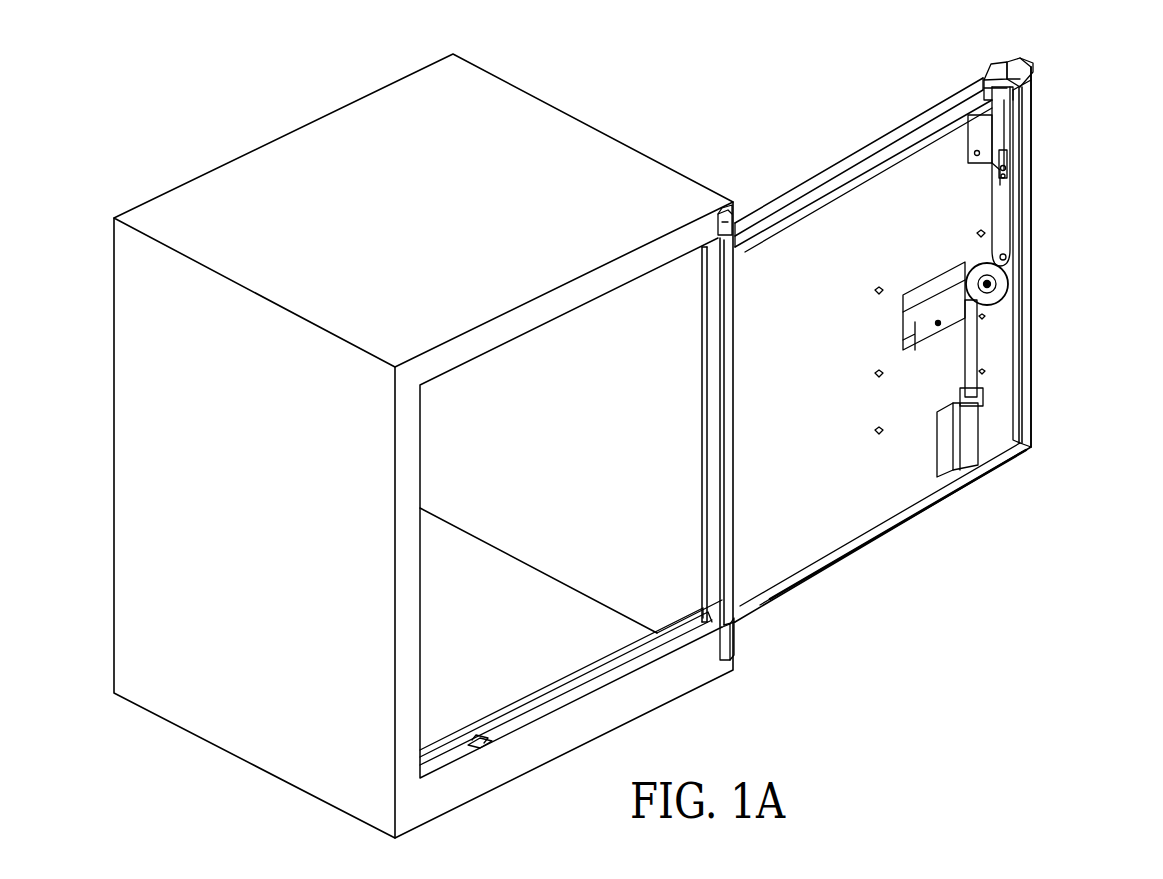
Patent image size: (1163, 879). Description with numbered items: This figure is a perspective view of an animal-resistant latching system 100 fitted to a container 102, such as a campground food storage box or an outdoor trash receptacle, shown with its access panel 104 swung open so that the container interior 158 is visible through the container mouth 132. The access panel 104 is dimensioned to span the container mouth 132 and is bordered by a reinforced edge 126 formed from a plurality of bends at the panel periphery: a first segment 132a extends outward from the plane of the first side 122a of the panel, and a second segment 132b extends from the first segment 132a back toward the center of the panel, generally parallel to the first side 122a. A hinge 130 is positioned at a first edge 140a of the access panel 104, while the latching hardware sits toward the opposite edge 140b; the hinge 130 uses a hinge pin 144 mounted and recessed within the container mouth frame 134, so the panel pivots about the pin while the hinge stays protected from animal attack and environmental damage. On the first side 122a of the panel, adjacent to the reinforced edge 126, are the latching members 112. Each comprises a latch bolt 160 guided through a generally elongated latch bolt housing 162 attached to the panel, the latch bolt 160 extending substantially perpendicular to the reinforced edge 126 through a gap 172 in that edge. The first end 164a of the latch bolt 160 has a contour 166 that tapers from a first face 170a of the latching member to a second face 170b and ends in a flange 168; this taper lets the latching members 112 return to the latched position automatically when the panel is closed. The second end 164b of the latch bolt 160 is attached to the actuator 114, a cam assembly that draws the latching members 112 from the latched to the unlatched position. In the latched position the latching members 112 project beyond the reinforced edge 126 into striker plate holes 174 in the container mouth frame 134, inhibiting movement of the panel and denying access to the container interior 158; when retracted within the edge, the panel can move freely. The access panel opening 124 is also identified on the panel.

The animal-resistant latching system 100 is at (1064, 66).
The container 102 is at (148, 535).
The access panel 104 is at (1007, 463).
The latching member 112 is at (1003, 118).
The actuator 114 is at (1000, 285).
The first side 122a is at (940, 160).
The access panel opening 124 is at (923, 297).
The reinforced edge 126 is at (1023, 245).
The hinge 130 is at (716, 226).
The container mouth 132 is at (556, 655).
The first segment 132a is at (880, 140).
The second segment 132b is at (942, 497).
The container mouth frame 134 is at (420, 745).
The first edge 140a is at (727, 496).
The door free edge 140b is at (1033, 363).
The hinge pin 144 is at (735, 212).
The container interior 158 is at (490, 566).
The latch bolt 160 is at (1020, 88).
The latch bolt housing 162 is at (1010, 133).
The first end 164a is at (987, 64).
The second end 164b is at (1007, 157).
The contour 166 is at (1011, 61).
The flange 168 is at (1020, 78).
The first face 170a is at (988, 72).
The second face 170b is at (1020, 67).
The gap 172 is at (987, 80).
The striker plate holes 174 is at (488, 749).